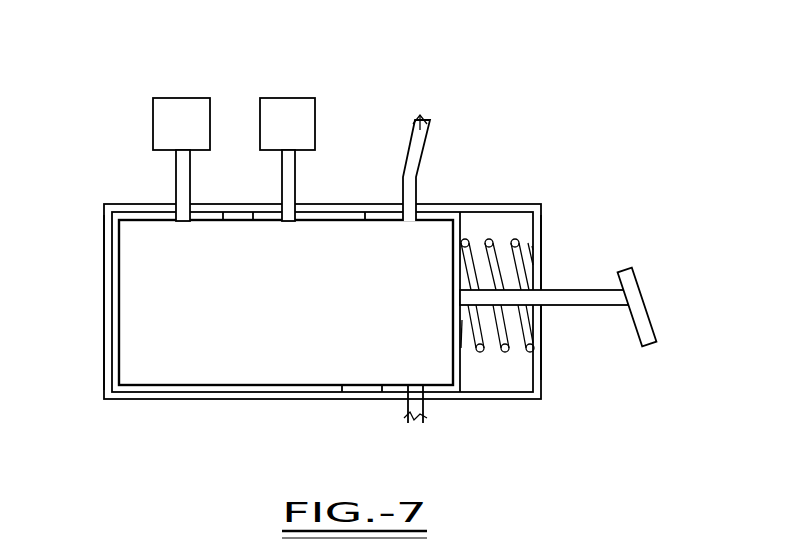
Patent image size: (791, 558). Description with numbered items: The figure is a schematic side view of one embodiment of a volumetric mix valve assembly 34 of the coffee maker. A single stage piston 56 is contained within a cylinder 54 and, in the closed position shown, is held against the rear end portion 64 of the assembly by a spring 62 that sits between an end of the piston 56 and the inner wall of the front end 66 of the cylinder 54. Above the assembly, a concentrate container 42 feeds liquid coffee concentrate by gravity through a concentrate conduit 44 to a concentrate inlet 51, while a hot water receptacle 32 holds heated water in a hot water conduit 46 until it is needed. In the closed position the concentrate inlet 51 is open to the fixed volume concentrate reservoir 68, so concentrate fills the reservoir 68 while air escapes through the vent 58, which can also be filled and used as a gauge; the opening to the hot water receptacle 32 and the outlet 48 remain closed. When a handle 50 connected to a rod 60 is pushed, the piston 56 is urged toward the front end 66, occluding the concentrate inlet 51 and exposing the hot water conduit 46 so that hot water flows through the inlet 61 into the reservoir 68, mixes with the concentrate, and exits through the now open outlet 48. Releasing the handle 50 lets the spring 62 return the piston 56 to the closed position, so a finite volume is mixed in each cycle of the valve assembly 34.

The volumetric mix valve assembly 34 is at (461, 103).
The concentrate container 42 is at (178, 103).
The hot water receptacle 32 is at (283, 103).
The concentrate conduit 44 is at (176, 173).
The hot water conduit 46 is at (297, 176).
The concentrate inlet 51 is at (186, 221).
The inlet 61 is at (292, 221).
The piston 56 is at (352, 212).
The vent 58 is at (426, 142).
The cylinder 54 is at (452, 203).
The front end 66 is at (541, 222).
The rod 60 is at (573, 290).
The handle 50 is at (648, 317).
The spring 62 is at (505, 348).
The rear end portion 64 is at (104, 306).
The fixed volume concentrate reservoir 68 is at (282, 317).
The outlet 48 is at (405, 420).